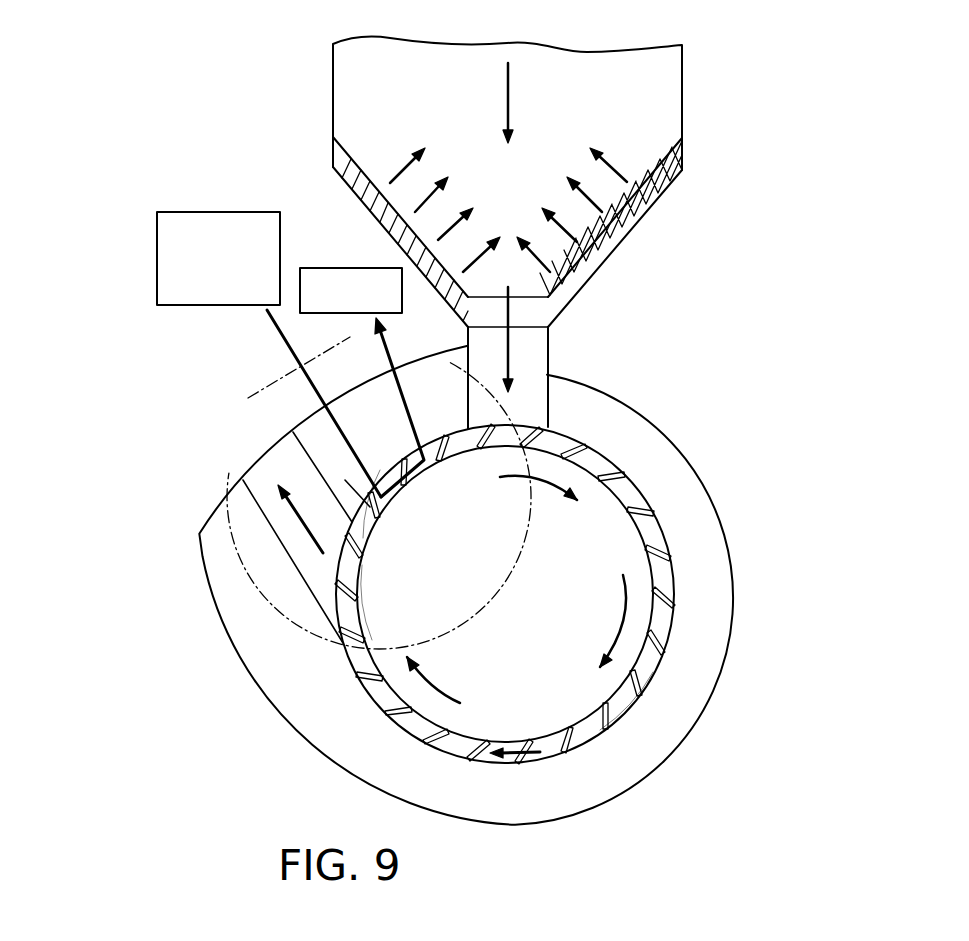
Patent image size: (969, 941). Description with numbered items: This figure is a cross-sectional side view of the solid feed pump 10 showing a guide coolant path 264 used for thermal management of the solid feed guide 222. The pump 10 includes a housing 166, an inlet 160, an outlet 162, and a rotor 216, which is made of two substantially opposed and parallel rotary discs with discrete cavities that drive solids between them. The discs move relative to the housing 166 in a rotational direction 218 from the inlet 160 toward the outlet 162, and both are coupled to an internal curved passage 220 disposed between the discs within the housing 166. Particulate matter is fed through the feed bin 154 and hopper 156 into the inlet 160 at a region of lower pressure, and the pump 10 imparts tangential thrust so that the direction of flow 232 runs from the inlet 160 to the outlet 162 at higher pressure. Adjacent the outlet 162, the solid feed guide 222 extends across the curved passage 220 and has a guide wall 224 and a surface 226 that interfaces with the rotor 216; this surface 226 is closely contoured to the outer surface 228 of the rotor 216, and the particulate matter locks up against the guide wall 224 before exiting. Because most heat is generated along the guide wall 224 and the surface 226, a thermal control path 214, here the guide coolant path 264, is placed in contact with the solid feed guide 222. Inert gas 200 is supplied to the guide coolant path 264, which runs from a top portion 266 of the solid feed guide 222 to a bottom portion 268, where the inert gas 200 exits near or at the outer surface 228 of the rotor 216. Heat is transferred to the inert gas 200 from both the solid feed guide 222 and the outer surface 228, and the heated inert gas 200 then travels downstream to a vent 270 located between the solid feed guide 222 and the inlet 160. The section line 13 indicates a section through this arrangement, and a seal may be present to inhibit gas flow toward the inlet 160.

The solid feed pump 10 is at (258, 437).
The section line 13- 13 is at (240, 440).
The feed bin 154 is at (683, 63).
The hopper 156 is at (640, 217).
The inlet 160 is at (548, 352).
The outlet 162 is at (212, 520).
The housing 166 is at (737, 603).
The inert gas 200 is at (160, 215).
The thermal control path 214 is at (165, 335).
The rotor 216 is at (592, 750).
The rotational direction 218 is at (440, 688).
The curved passage 220 is at (668, 582).
The solid feed guide 222 is at (363, 538).
The guide wall 224 is at (362, 565).
The rotor interfacing surface 226 is at (386, 510).
The outer surface of the rotor 228 is at (653, 672).
The direction of flow 232 is at (534, 760).
The guide coolant path 264 is at (273, 323).
The top portion of the solid feed guide 266 is at (353, 408).
The bottom portion of the solid feed guide 268 is at (383, 473).
The vent 270 is at (338, 266).